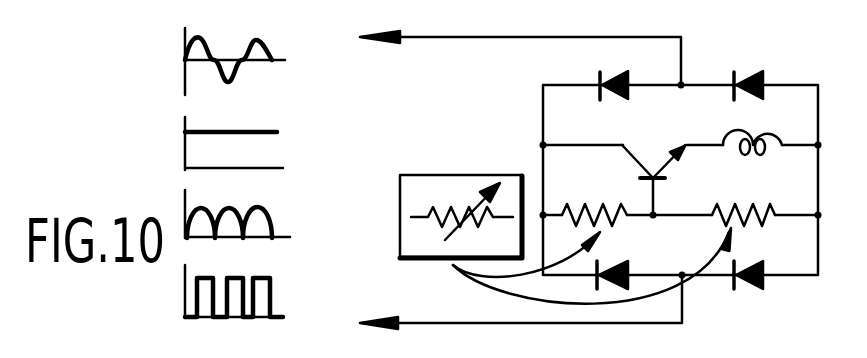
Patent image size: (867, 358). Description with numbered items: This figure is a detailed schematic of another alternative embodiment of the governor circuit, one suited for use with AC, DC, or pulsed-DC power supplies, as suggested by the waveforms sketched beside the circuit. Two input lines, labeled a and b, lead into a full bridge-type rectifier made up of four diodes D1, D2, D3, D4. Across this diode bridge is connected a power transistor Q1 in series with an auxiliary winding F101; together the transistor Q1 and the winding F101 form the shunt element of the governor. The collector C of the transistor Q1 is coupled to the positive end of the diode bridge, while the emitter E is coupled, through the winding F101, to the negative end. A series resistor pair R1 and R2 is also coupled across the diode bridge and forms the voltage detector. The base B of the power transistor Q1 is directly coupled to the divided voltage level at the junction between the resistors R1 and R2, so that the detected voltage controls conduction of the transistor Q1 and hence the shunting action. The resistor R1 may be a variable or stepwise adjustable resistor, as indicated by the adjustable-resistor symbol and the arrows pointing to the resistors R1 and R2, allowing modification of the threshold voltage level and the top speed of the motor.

The diode D1 is at (619, 71).
The diode D2 is at (752, 71).
The diode D3 is at (633, 266).
The diode D4 is at (741, 291).
The resistor R1 is at (594, 199).
The resistor R2 is at (743, 199).
The power transistor Q1 is at (653, 166).
The auxiliary winding F101 is at (752, 129).
The collector C is at (609, 132).
The base B is at (682, 182).
The emitter E is at (698, 132).
The terminal a is at (505, 48).
The terminal b is at (505, 308).